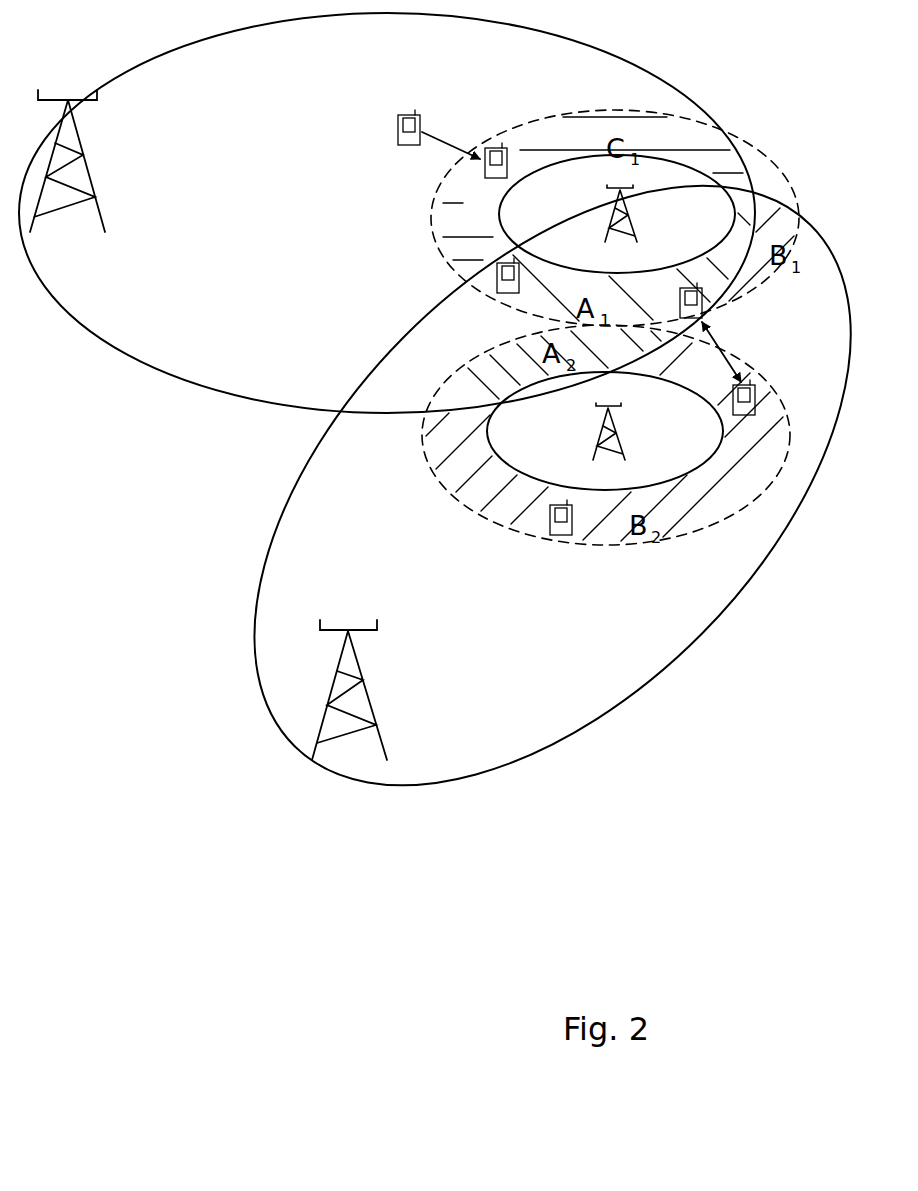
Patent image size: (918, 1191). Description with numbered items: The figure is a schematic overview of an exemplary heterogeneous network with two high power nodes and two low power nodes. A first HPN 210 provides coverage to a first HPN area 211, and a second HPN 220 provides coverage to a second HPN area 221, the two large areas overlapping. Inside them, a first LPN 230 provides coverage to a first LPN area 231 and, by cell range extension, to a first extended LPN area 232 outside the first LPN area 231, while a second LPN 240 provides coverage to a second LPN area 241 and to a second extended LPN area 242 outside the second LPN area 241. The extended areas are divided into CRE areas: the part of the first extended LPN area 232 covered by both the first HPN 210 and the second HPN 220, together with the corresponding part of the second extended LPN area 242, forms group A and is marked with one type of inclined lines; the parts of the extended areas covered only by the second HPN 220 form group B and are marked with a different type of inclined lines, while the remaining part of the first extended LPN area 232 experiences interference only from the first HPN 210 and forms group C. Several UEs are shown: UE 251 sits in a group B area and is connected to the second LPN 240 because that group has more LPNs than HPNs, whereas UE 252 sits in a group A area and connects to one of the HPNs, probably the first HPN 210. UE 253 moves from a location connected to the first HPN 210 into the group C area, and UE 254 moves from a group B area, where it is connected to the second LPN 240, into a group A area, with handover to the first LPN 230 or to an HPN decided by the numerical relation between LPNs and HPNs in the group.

The first HPN 210 is at (95, 188).
The first HPN area 211 is at (190, 45).
The second HPN 220 is at (377, 717).
The second HPN area 221 is at (257, 587).
The first LPN 230 is at (633, 212).
The first LPN area 231 is at (538, 174).
The first extended LPN area 232 is at (565, 95).
The second LPN 240 is at (620, 430).
The second LPN area 241 is at (677, 478).
The second extended LPN area 242 is at (460, 502).
The UE 251 is at (560, 535).
The UE 252 is at (505, 295).
The UE 253 is at (405, 147).
The UE 254 is at (703, 295).